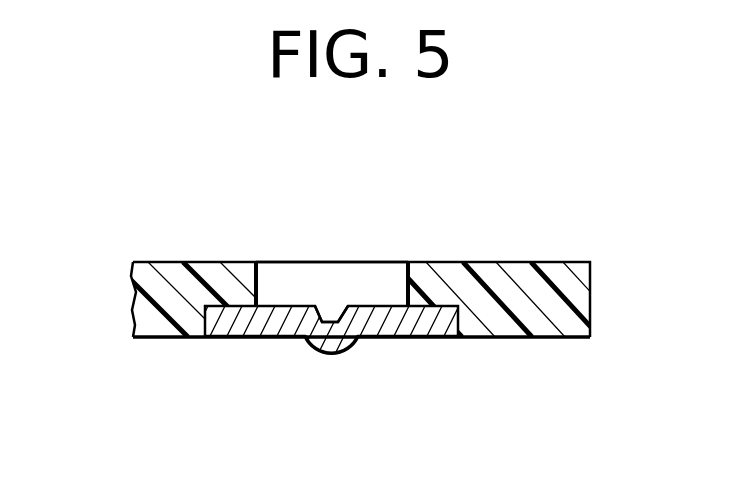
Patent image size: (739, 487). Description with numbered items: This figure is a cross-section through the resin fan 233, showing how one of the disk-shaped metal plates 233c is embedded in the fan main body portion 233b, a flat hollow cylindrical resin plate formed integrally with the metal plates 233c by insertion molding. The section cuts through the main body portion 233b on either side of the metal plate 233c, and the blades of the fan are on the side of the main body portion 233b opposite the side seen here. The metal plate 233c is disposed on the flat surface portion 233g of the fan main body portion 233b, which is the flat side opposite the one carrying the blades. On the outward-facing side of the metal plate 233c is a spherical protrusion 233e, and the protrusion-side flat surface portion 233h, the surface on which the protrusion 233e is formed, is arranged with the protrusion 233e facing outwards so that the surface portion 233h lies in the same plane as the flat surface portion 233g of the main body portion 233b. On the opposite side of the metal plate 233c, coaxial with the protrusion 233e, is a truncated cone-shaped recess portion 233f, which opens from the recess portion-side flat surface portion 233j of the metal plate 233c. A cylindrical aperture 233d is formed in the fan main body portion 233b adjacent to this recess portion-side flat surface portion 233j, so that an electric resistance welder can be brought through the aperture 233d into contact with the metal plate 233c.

The resin fan 233 is at (192, 253).
The fan main body portion 233b is at (162, 262).
The metal plate 233c is at (435, 338).
The cylindrical aperture 233d is at (382, 278).
The spherical protrusion 233e is at (347, 348).
The truncated cone-shaped recess portion 233f is at (333, 308).
The flat surface portion 233g is at (165, 338).
The protrusion-side flat surface portion 233h is at (272, 338).
The recess portion-side flat surface portion 233j is at (283, 300).